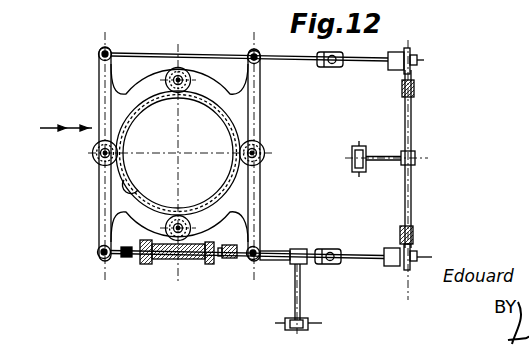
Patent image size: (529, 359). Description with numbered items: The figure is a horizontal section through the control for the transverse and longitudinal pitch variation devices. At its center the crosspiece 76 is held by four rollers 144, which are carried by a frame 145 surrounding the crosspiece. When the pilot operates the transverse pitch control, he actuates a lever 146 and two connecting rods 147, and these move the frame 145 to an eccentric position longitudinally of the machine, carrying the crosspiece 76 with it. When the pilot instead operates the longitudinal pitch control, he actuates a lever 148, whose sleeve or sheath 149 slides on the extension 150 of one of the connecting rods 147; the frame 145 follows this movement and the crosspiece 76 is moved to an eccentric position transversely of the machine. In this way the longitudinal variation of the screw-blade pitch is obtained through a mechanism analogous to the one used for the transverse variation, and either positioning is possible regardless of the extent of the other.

The crosspiece 76 is at (117, 182).
The rollers 144 is at (173, 68).
The frame 145 is at (118, 98).
The lever 146 is at (382, 153).
The connecting rods 147 is at (360, 60).
The lever 148 is at (300, 286).
The sleeve or sheath 149 is at (158, 264).
The extension 150 is at (218, 265).